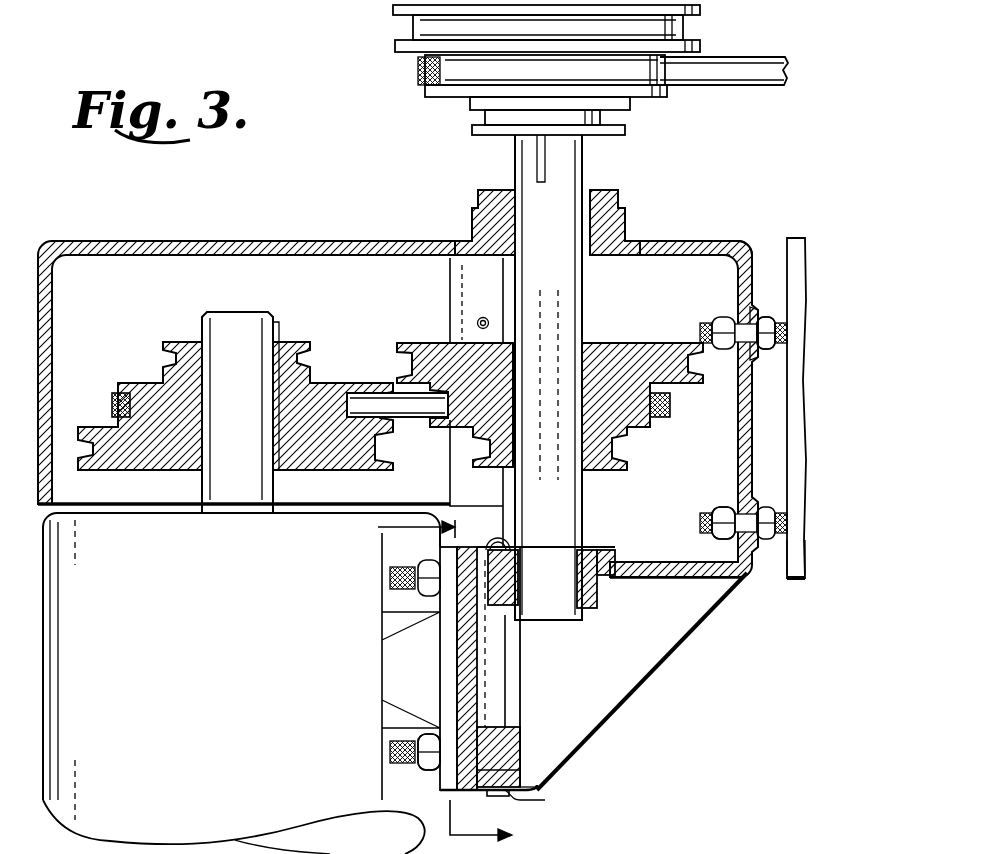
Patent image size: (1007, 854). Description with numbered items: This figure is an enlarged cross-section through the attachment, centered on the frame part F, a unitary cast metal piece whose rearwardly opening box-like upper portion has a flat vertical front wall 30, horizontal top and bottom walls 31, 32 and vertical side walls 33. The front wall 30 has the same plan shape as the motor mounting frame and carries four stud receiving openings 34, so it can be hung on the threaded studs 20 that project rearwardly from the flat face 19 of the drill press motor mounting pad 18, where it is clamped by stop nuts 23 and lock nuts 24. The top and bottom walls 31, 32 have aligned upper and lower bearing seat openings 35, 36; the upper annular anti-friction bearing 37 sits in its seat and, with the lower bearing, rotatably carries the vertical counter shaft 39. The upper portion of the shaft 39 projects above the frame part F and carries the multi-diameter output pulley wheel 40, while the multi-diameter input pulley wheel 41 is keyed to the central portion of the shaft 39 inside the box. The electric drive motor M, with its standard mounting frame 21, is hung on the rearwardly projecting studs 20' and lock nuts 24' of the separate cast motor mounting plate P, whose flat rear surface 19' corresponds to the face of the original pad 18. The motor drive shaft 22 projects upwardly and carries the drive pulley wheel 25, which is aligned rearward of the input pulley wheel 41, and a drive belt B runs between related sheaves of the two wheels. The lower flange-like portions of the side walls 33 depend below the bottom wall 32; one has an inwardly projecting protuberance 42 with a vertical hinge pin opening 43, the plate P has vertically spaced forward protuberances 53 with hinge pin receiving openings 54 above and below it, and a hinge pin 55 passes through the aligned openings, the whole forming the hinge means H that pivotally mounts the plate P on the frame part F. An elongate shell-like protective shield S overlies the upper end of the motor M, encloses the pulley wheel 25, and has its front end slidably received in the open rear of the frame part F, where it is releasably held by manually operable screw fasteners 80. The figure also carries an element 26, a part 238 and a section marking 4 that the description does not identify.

The protective shield S is at (278, 240).
The upper bearing receiving seat opening 35 is at (492, 196).
The upper annular anti-friction bearing 37 is at (622, 192).
The top wall 31 is at (745, 250).
The motor mounting stud receiving openings 34 is at (754, 310).
The bottom wall 32 is at (700, 585).
The screw fasteners 80 is at (478, 319).
The counter shaft 39 is at (565, 305).
The multi-diameter output pulley wheel 40 is at (397, 17).
The arm 26 is at (762, 42).
The drive pulley wheel 25 is at (162, 402).
The drive shaft 22 is at (228, 514).
The multi-diameter input pulley wheel 41 is at (428, 342).
The drive belt B is at (372, 393).
The front wall 30 is at (792, 248).
The rearwardly disposed face 19 is at (776, 589).
The motor mounting pad 18 is at (800, 582).
The threaded studs 20 is at (720, 409).
The stop nuts 23 is at (766, 350).
The lock nuts 24 is at (713, 494).
The electric drive motor M is at (262, 700).
The rear surface 19' is at (375, 673).
The mounting frame 21 is at (440, 650).
The motor mounting plate P is at (457, 671).
The motor mounting studs 20' is at (364, 665).
The lock nuts 24' is at (347, 769).
The hinge means H is at (527, 735).
The laterally inwardly projecting protuberance 42 is at (507, 663).
The vertical hinge pin opening 43 is at (540, 665).
The side walls 33 is at (668, 664).
The lower bearing receiving seat opening 36 is at (580, 605).
The bearing flange 238 is at (606, 596).
The forwardly projecting protuberances 53 is at (500, 768).
The hinge pin receiving openings 54 is at (545, 790).
The hinge pin 55 is at (545, 800).
The section line 4 is at (444, 680).
The frame part F is at (672, 242).